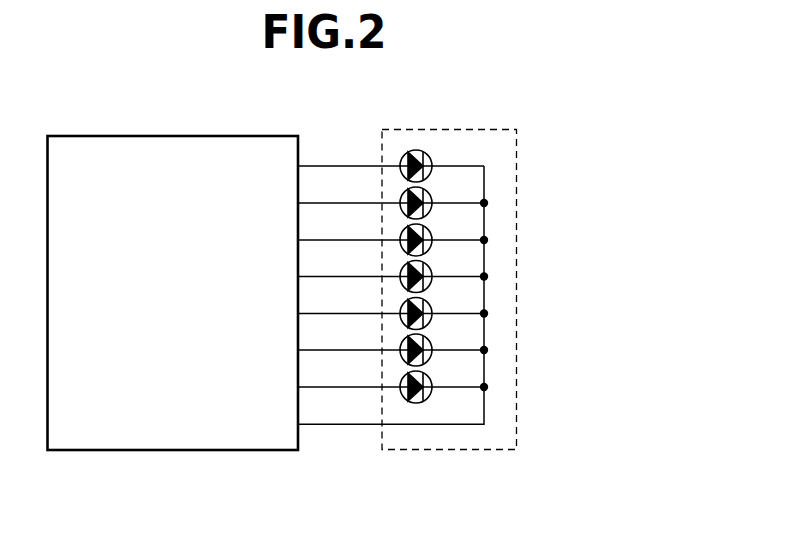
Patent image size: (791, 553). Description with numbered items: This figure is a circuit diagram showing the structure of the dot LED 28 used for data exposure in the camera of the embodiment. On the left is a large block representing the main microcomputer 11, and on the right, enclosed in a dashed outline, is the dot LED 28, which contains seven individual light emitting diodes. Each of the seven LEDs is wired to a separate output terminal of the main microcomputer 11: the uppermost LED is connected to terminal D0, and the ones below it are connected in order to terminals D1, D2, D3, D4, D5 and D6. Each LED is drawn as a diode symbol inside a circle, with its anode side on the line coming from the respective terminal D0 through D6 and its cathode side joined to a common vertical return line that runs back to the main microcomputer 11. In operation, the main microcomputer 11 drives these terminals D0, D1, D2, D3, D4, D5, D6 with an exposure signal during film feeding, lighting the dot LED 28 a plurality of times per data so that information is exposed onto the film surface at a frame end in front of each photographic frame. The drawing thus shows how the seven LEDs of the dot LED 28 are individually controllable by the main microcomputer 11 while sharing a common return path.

The main microcomputer 11 is at (167, 136).
The dot LED 28 is at (413, 129).
The terminal D0 is at (391, 155).
The terminal D1 is at (391, 192).
The terminal D2 is at (391, 229).
The terminal D3 is at (391, 266).
The terminal D4 is at (391, 303).
The terminal D5 is at (391, 339).
The terminal D6 is at (391, 376).